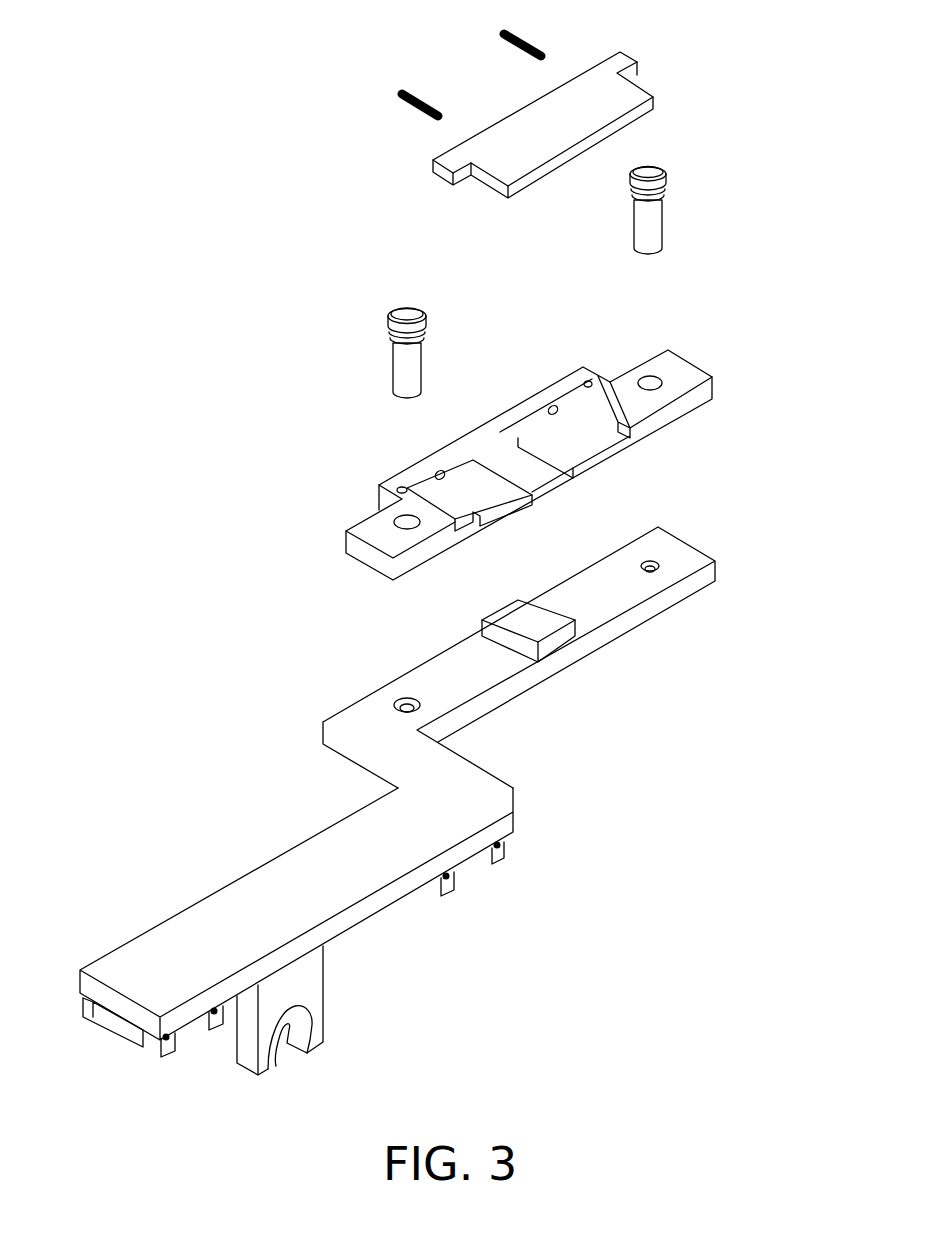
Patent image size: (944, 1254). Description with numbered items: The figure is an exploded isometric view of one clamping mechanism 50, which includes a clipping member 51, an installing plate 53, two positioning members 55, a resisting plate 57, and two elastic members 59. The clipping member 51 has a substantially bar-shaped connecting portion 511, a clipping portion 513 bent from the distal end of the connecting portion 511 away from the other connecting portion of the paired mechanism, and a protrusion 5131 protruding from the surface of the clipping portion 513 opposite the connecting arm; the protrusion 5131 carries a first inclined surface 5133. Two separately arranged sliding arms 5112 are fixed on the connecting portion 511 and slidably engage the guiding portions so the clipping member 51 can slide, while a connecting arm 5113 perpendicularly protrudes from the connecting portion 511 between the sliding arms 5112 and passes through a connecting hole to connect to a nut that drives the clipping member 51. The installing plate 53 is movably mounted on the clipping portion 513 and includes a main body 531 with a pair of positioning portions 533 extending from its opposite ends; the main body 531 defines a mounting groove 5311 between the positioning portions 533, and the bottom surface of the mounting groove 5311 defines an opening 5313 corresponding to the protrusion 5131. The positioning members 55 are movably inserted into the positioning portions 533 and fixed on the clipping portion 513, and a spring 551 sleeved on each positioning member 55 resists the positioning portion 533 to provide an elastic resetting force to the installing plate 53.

The clamping mechanism 50 is at (830, 6).
The clipping member 51 is at (448, 811).
The connecting portion 511 is at (421, 897).
The sliding arms 5112 is at (152, 1047).
The connecting arm 5113 is at (307, 983).
The clipping portion 513 is at (535, 657).
The protrusion 5131 is at (505, 639).
The first inclined surface 5133 is at (518, 618).
The installing plate 53 is at (554, 434).
The main body 531 is at (560, 387).
The mounting groove 5311 is at (440, 498).
The opening 5313 is at (520, 465).
The positioning portions 533 is at (678, 383).
The positioning members 55 is at (655, 215).
The spring 551 is at (390, 331).
The resisting plate 57 is at (620, 96).
The elastic members 59 is at (543, 50).